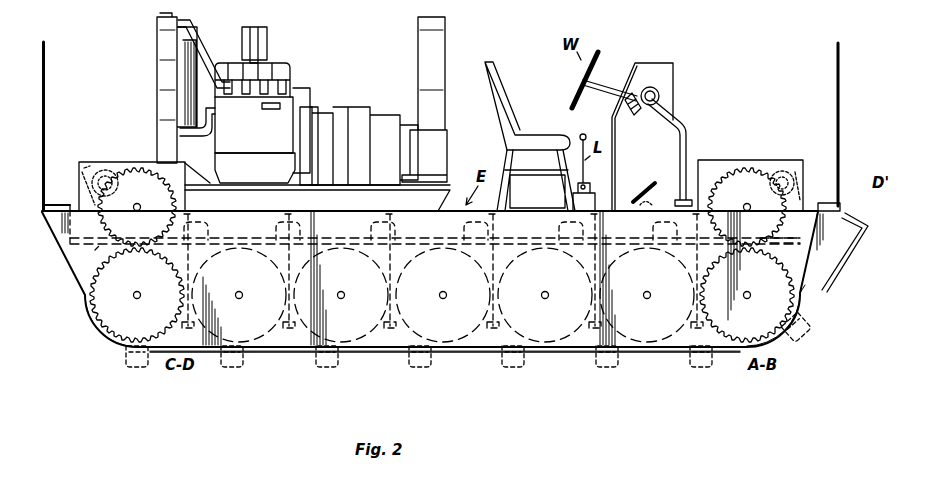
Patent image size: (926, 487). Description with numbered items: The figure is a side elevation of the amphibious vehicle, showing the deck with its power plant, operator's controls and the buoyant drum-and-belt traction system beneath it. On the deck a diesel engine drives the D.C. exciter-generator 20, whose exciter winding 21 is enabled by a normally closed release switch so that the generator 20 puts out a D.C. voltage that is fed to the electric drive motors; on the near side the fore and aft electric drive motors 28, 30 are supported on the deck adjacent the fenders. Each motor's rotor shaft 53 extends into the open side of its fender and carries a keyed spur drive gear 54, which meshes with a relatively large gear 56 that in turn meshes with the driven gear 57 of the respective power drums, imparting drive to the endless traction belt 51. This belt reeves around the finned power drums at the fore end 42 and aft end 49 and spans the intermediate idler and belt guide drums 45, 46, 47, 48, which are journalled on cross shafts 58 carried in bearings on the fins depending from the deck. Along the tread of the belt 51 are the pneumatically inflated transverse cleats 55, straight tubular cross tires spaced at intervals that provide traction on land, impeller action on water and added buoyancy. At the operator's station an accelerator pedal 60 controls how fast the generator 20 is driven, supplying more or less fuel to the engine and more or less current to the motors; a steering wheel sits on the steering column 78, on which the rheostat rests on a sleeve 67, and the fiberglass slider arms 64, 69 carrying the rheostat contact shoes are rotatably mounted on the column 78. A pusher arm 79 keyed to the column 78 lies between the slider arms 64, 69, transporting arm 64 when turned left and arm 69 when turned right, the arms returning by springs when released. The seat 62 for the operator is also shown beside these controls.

The D.C. exciter-generator 20 is at (352, 125).
The exciter winding 21 is at (410, 120).
The electric drive motor 28 is at (781, 170).
The electric drive motor 30 is at (104, 170).
The fore end 42 is at (85, 230).
The idler drum 45 is at (361, 227).
The idler drum 46 is at (458, 227).
The idler drum 47 is at (552, 227).
The idler drum 48 is at (645, 227).
The aft end 49 is at (782, 246).
The endless traction belt 51 is at (552, 352).
The rotor shaft 53 is at (100, 178).
The spur drive gear 54 is at (85, 180).
The pneumatically inflated transverse cleat 55 is at (146, 346).
The large gear 56 is at (110, 222).
The driven gear 57 is at (110, 312).
The cross shaft 58 is at (138, 291).
The accelerator pedal 60 is at (636, 200).
The operator seat 62 is at (505, 75).
The slider arm 64 is at (628, 92).
The sleeve 67 is at (680, 158).
The slider arm 69 is at (658, 97).
The steering column 78 is at (600, 90).
The pusher arm 79 is at (650, 63).